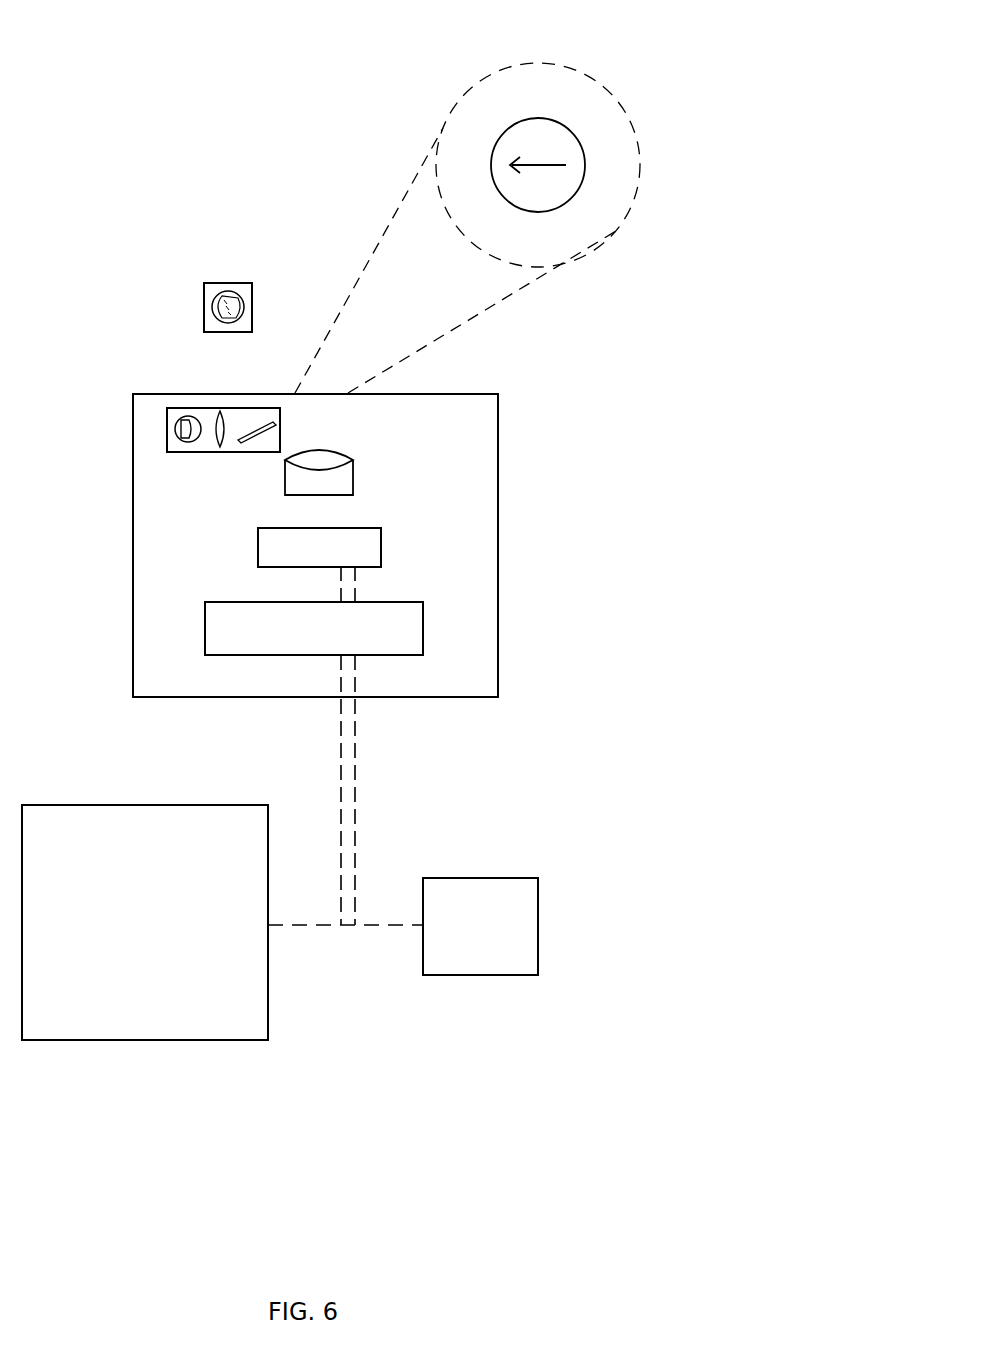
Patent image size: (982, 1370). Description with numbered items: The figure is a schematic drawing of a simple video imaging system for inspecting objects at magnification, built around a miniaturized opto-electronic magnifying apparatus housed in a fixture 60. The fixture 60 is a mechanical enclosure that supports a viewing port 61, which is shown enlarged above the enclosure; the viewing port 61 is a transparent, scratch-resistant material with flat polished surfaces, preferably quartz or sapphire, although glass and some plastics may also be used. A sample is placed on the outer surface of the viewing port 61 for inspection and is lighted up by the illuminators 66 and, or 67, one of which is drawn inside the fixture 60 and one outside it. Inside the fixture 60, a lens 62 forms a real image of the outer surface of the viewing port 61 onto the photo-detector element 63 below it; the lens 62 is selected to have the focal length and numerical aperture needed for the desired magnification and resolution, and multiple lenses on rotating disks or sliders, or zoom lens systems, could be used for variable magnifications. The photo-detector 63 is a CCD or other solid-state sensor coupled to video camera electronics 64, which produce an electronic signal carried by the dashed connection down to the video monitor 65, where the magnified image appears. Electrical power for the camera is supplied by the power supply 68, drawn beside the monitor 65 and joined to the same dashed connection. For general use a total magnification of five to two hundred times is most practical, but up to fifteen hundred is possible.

The fixture 60 is at (498, 578).
The viewing port 61 is at (509, 117).
The lens 62 is at (319, 472).
The photo-detector element 63 is at (319, 547).
The video camera electronics 64 is at (314, 628).
The video monitor 65 is at (145, 922).
The illuminator 66 is at (165, 430).
The illuminator 67 is at (203, 307).
The power supply 68 is at (480, 926).